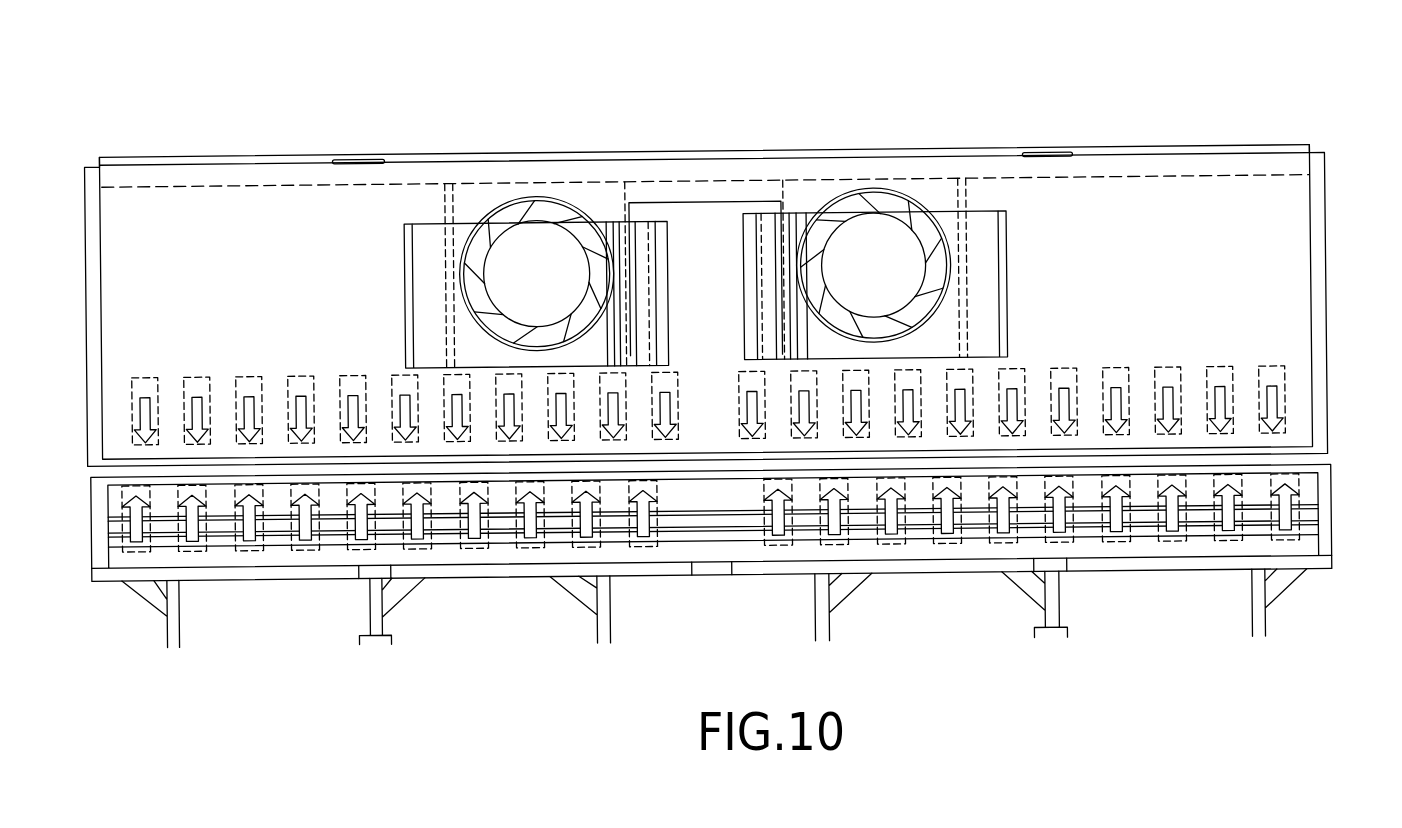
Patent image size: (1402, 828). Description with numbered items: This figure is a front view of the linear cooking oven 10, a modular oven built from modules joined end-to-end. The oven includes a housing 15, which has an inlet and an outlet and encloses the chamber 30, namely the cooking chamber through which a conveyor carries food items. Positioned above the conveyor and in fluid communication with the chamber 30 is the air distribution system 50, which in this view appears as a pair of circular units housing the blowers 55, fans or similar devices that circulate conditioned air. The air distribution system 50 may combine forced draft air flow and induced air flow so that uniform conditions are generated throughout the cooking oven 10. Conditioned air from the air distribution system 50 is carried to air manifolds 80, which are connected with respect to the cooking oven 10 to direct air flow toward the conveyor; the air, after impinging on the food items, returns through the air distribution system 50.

The cooking oven 10 is at (247, 148).
The housing 15 is at (1312, 185).
The chamber 30 is at (1298, 452).
The air distribution system 50 is at (427, 228).
The blowers 55 is at (572, 252).
The air manifold 80 is at (1248, 392).